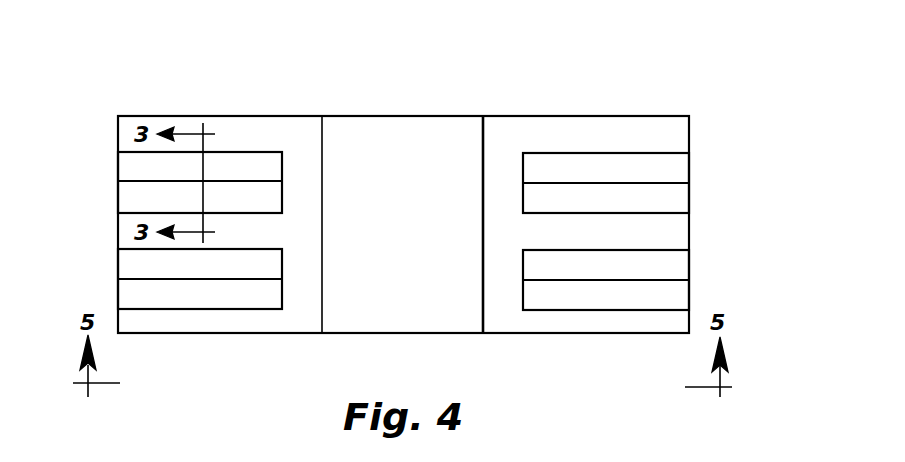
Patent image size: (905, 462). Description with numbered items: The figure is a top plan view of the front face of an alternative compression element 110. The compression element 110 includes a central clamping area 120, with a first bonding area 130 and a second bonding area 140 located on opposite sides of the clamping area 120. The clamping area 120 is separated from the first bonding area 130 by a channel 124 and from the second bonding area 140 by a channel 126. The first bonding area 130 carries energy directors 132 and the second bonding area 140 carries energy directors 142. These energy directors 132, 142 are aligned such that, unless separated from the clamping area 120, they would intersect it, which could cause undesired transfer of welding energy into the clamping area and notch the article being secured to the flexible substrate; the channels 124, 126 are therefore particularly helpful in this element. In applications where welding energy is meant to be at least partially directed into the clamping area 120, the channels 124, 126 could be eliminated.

The compression element 110 is at (406, 200).
The clamping area 120 is at (482, 100).
The channel 124 is at (300, 292).
The channel 126 is at (503, 293).
The first bonding area 130 is at (282, 100).
The energy directors 132 is at (127, 202).
The second bonding area 140 is at (686, 102).
The energy directors 142 is at (677, 173).